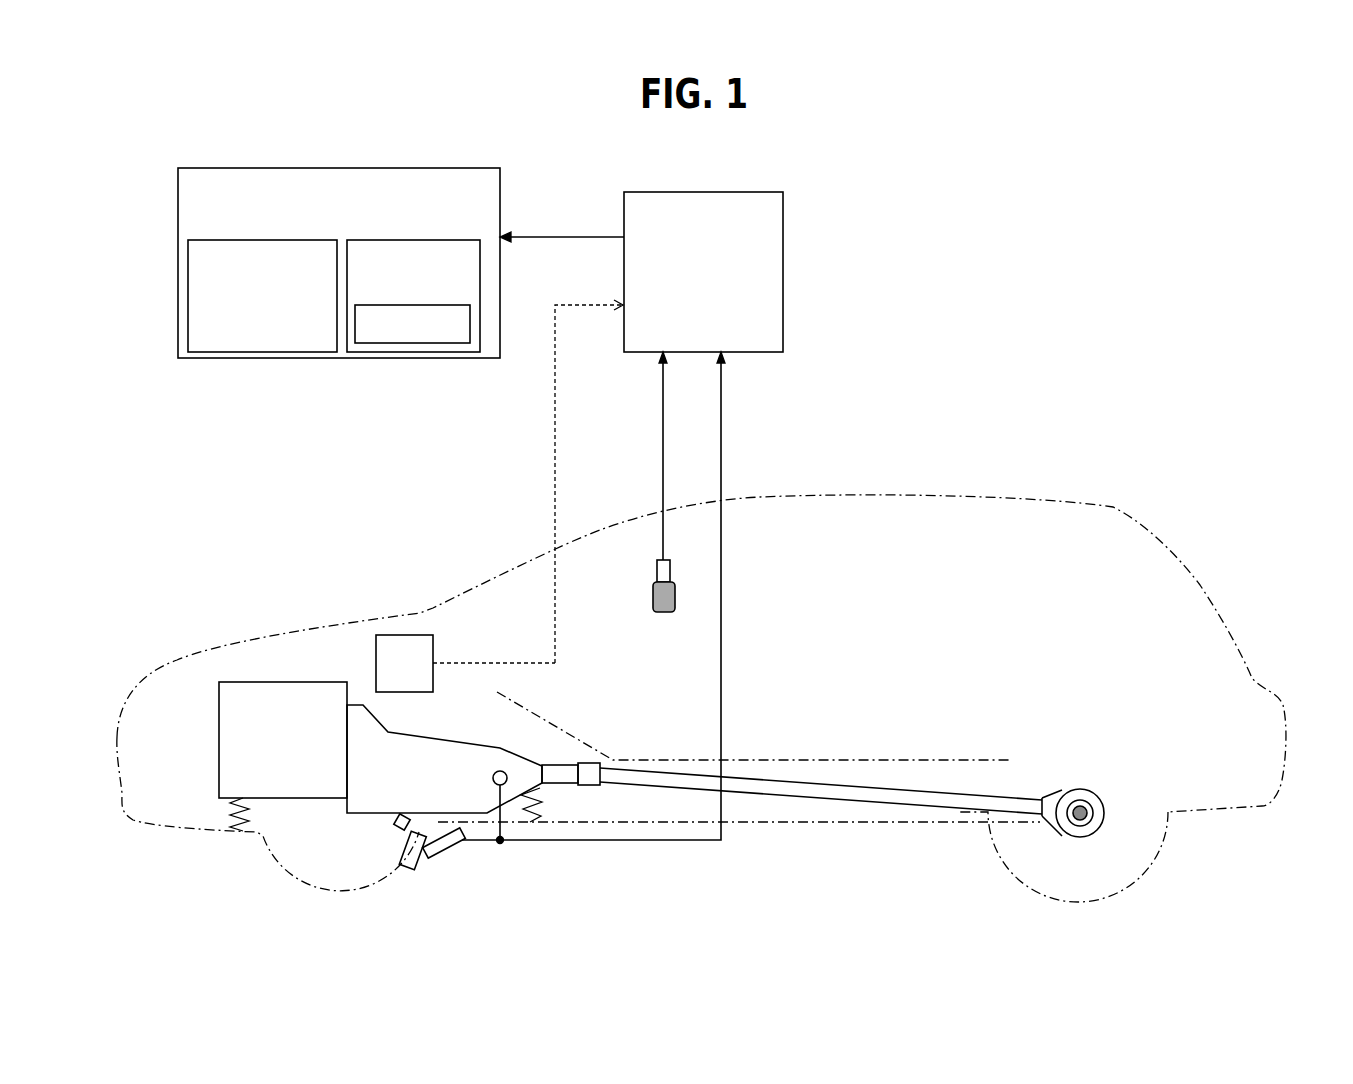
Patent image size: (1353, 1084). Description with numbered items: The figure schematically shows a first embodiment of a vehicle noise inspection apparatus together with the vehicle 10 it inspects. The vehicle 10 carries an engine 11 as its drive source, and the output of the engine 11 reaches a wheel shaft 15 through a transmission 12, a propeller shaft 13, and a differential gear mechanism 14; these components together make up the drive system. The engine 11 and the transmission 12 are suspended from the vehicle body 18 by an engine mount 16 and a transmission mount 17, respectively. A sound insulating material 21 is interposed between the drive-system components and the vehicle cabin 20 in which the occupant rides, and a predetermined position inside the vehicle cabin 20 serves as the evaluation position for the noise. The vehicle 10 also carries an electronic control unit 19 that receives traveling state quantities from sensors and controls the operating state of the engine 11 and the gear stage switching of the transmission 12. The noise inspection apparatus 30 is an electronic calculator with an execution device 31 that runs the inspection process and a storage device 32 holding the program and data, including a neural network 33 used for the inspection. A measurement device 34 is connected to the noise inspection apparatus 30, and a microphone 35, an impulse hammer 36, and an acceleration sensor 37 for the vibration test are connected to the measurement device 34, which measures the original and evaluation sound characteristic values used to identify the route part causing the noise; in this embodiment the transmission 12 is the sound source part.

The vehicle 10 is at (270, 563).
The engine 11 is at (219, 738).
The transmission 12 is at (388, 816).
The propeller shaft 13 is at (830, 804).
The differential gear mechanism 14 is at (1071, 790).
The wheel shaft 15 is at (1104, 817).
The engine mount 16 is at (230, 813).
The transmission mount 17 is at (541, 809).
The vehicle body 18 is at (755, 823).
The electronic control unit 19 is at (376, 648).
The vehicle cabin 20 is at (804, 617).
The sound insulating material 21 is at (577, 737).
The noise inspection apparatus 30 is at (178, 221).
The execution device 31 is at (264, 354).
The storage device 32 is at (380, 354).
The neural network 33 is at (440, 344).
The measurement device 34 is at (784, 222).
The microphone 35 is at (655, 571).
The impulse hammer 36 is at (455, 856).
The acceleration sensor 37 is at (492, 779).